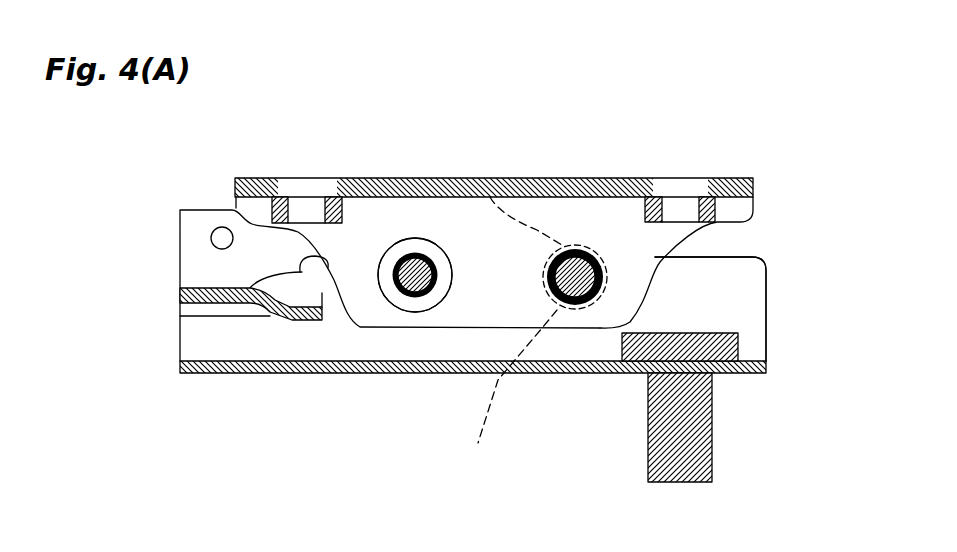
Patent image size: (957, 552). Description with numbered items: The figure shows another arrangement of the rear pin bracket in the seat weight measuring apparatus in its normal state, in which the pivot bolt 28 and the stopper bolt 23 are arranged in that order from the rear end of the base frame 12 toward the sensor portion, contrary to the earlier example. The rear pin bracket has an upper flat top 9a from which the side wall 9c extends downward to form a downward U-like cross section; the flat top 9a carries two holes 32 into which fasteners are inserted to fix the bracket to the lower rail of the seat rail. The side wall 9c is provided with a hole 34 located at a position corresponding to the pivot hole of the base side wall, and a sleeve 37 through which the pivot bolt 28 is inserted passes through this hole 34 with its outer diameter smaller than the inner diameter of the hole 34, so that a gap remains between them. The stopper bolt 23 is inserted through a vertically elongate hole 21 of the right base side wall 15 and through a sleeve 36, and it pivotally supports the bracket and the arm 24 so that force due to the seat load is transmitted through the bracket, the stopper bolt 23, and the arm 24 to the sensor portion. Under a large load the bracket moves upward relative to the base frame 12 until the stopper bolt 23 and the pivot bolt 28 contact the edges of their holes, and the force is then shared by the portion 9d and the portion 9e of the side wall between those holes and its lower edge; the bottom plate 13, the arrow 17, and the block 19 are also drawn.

The flat top 9a is at (425, 178).
The side wall 9c is at (628, 277).
The portion between the hole and the lower edge of the side wall 9d is at (570, 308).
The portion between the hole and the lower edge of the side wall 9e is at (417, 312).
The base frame 12 is at (170, 367).
The bottom plate 13 is at (205, 373).
The right base side wall 15 is at (200, 338).
The direction of rotation 17 is at (568, 447).
The stopper block 19 is at (660, 442).
The elongate hole 21 is at (570, 245).
The stopper bolt 23 is at (580, 308).
The arm 24 is at (295, 298).
The pivot bolt 28 is at (410, 298).
The hole 32 is at (335, 192).
The hole 34 is at (443, 283).
The sleeve 36 is at (600, 252).
The sleeve 37 is at (402, 295).